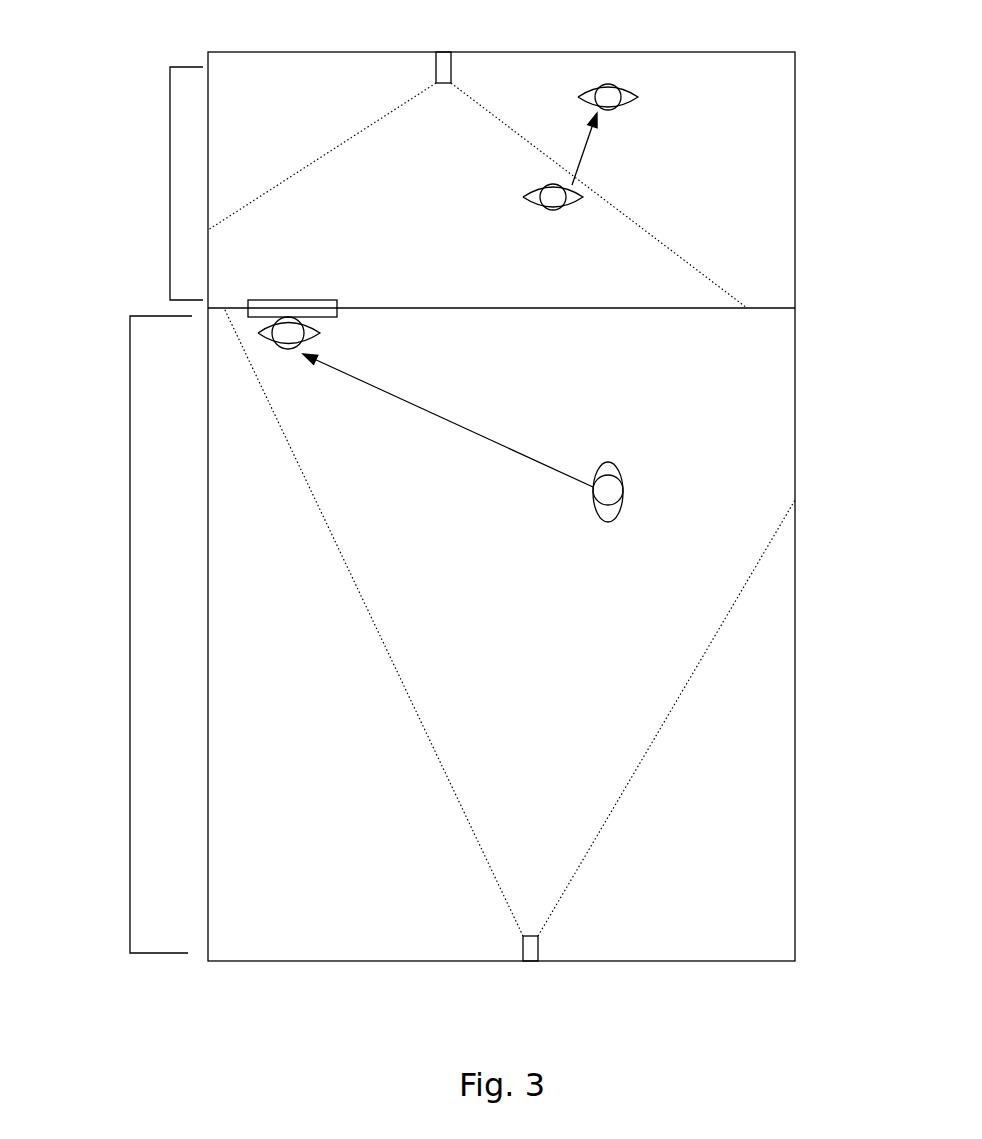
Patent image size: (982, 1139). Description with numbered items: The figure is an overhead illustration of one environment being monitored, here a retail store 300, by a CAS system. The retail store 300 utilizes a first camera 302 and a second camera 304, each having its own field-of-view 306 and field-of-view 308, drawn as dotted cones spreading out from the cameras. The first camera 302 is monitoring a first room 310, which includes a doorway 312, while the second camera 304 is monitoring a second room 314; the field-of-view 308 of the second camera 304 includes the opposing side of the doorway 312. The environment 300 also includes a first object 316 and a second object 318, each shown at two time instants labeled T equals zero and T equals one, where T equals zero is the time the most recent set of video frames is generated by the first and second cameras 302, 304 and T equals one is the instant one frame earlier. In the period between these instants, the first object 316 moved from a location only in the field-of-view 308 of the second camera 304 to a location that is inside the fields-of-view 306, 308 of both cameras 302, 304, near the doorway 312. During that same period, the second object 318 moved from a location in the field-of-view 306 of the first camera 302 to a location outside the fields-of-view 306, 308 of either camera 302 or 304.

The retail store 300 is at (203, 52).
The first camera 302 is at (452, 52).
The second camera 304 is at (545, 942).
The field-of-view of first camera 306 is at (717, 267).
The field-of-view of second camera 308 is at (716, 650).
The first room 310 is at (170, 167).
The doorway 312 is at (248, 317).
The second room 314 is at (127, 543).
The first object 316 is at (320, 333).
The second object 318 is at (547, 168).